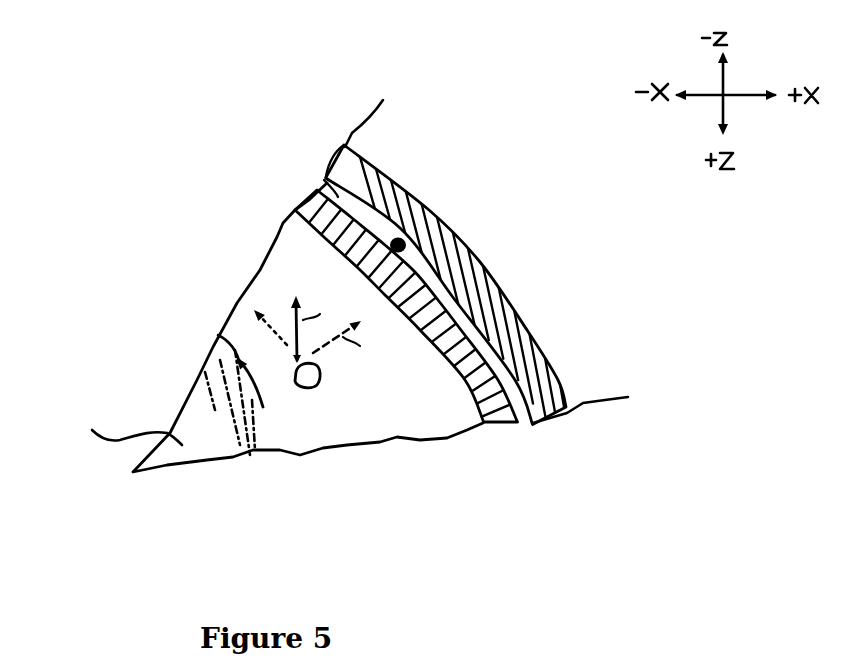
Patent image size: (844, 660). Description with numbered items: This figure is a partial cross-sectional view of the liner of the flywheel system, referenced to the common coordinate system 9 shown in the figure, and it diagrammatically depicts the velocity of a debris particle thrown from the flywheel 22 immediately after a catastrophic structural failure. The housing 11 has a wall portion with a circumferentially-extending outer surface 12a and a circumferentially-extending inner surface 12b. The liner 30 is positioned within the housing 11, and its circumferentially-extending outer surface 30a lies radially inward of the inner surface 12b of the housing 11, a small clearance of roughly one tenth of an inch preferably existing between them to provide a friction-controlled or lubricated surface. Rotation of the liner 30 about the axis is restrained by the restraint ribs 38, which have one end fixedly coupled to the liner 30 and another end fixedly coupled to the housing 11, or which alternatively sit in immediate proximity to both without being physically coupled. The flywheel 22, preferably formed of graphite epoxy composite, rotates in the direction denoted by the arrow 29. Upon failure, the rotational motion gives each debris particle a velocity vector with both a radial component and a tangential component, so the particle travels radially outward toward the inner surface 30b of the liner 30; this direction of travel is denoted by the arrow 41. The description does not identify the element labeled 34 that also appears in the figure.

The coordinate system 9 is at (753, 67).
The housing 11 is at (514, 310).
The outer surface 12a is at (558, 383).
The inner surface 12b is at (347, 143).
The flywheel 22 is at (200, 367).
The arrow 29 is at (232, 340).
The liner 30 is at (497, 430).
The outer surface 30a is at (330, 187).
The inner surface 30b is at (466, 404).
The point on tooth surface 34 is at (310, 393).
The restraint ribs 38 is at (429, 210).
The arrow 41 is at (288, 328).